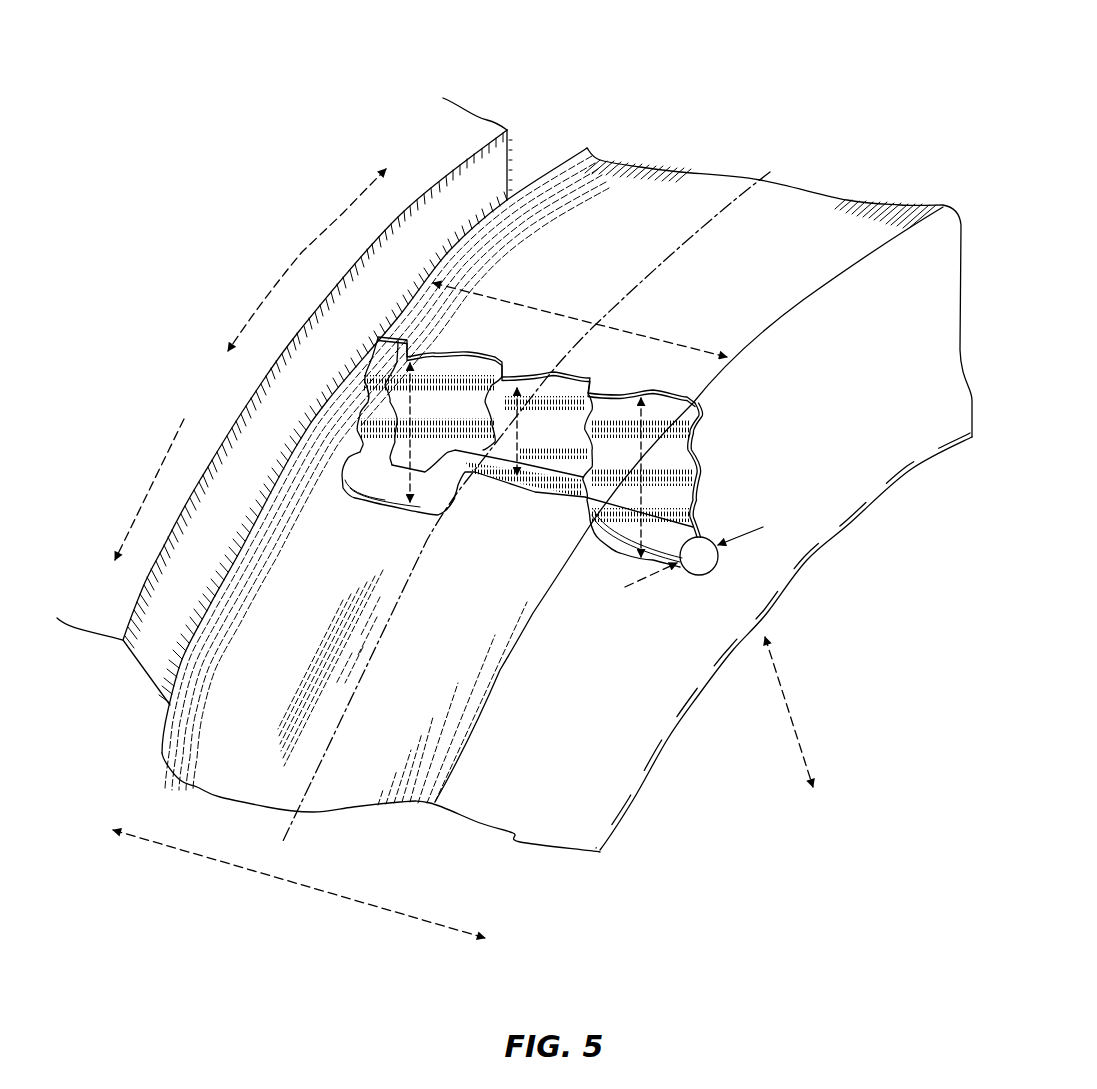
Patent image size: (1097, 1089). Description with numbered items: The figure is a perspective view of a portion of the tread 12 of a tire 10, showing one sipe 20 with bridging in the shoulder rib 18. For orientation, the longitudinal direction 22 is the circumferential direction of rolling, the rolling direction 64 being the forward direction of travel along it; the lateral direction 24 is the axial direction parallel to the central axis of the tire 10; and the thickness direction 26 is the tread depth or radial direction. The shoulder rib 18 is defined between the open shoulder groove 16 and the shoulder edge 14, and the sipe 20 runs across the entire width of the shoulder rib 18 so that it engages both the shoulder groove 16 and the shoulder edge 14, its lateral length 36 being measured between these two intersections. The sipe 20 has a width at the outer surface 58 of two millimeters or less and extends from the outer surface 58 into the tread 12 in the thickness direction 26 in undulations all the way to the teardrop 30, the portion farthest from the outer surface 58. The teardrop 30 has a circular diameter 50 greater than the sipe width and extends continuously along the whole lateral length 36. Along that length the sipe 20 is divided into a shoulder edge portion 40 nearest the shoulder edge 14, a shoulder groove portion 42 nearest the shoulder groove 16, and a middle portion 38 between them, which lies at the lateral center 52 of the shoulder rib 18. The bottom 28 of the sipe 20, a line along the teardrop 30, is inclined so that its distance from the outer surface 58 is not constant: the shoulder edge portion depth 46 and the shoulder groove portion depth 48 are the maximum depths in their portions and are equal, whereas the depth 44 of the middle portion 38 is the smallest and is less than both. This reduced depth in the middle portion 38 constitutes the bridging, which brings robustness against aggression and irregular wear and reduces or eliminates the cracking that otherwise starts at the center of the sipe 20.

The tire 10 is at (840, 48).
The tread 12 is at (620, 178).
The shoulder edge 14 is at (823, 291).
The shoulder groove 16 is at (483, 187).
The shoulder rib 18 is at (868, 210).
The sipe 20 is at (534, 456).
The longitudinal direction 22 is at (332, 229).
The lateral direction 24 is at (375, 908).
The thickness direction 26 is at (793, 710).
The bottom 28 is at (700, 577).
The teardrop 30 is at (704, 542).
The lateral length 36 is at (660, 343).
The middle portion 38 is at (550, 392).
The shoulder edge portion 40 is at (700, 486).
The shoulder groove portion 42 is at (367, 443).
The depth 44 is at (507, 447).
The shoulder edge portion depth 46 is at (650, 427).
The shoulder groove portion depth 48 is at (413, 421).
The diameter 50 is at (743, 537).
The lateral center 52 is at (333, 720).
The outer surface 58 is at (702, 195).
The rolling direction 64 is at (165, 459).